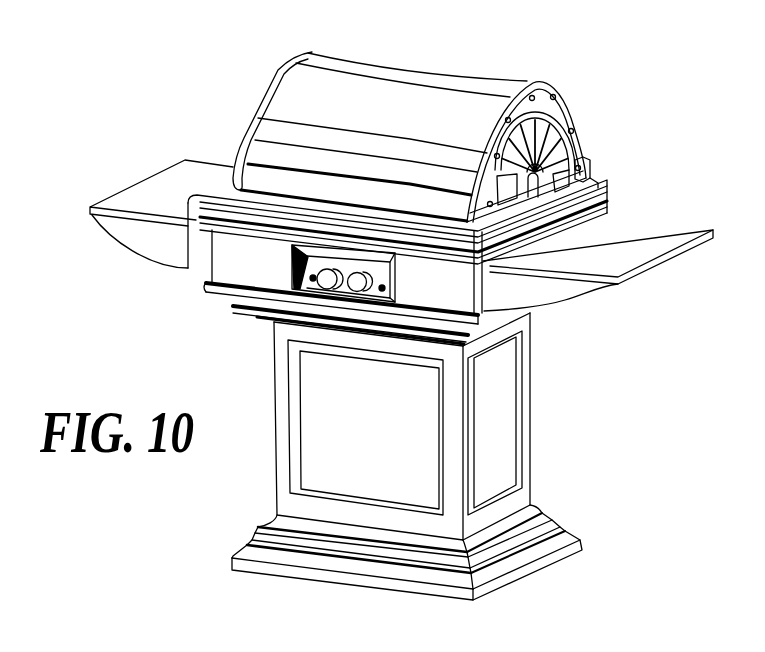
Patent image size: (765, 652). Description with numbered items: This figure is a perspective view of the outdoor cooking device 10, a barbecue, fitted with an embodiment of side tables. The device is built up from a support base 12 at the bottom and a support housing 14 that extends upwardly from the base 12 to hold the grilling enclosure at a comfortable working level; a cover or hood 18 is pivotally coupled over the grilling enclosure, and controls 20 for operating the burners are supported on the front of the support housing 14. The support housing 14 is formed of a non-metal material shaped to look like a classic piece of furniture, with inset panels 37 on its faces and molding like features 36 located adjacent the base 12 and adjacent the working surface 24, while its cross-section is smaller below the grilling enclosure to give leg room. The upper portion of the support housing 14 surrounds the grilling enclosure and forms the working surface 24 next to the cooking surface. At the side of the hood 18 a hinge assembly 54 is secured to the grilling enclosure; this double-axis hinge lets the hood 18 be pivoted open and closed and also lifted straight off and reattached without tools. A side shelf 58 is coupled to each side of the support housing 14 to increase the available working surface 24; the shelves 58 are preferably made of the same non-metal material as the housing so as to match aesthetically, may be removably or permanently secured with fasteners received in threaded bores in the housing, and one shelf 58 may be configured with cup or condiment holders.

The outdoor cooking device 10 is at (619, 101).
The support base 12 is at (490, 593).
The support housing 14 is at (537, 454).
The hood 18 is at (420, 67).
The controls 20 is at (336, 284).
The working surface 24 is at (189, 265).
The molding like features 36 is at (496, 375).
The inset panels 37 is at (317, 452).
The hinge assembly 54 is at (588, 170).
The side shelf 58 is at (183, 178).